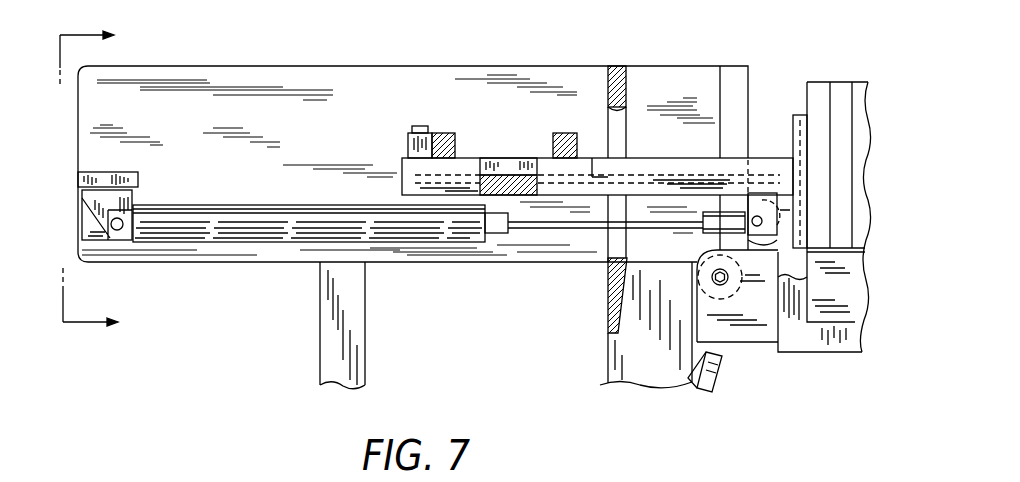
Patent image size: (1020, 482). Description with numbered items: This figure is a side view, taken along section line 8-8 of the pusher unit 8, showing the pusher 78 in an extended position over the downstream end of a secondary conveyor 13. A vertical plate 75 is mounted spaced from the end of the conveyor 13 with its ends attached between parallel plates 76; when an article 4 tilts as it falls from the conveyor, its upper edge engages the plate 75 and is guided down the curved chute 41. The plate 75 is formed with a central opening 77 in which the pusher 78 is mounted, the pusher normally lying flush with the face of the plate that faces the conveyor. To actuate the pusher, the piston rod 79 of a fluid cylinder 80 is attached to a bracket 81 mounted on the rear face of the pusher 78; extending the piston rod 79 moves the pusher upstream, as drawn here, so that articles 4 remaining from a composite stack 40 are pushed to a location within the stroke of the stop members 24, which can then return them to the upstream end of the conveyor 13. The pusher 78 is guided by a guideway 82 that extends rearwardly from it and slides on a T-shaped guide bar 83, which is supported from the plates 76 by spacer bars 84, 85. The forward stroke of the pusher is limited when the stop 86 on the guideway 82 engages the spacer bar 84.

The pusher unit 8 is at (98, 180).
The parallel plates 76 is at (565, 68).
The vertical plate 75 is at (618, 68).
The central opening 77 is at (625, 106).
The pusher 78 is at (796, 117).
The piston rod 79 is at (550, 232).
The fluid cylinder 80 is at (245, 212).
The bracket 81 is at (762, 193).
The guideway 82 is at (683, 165).
The T-shaped guide bar 83 is at (515, 175).
The spacer bar 84 is at (445, 133).
The spacer bar 85 is at (565, 133).
The stop 86 is at (418, 146).
The composite stack 40 is at (855, 82).
The article 4 is at (840, 232).
The stop members 24 is at (800, 290).
The secondary conveyor 13 is at (760, 350).
The curved chute 41 is at (698, 395).